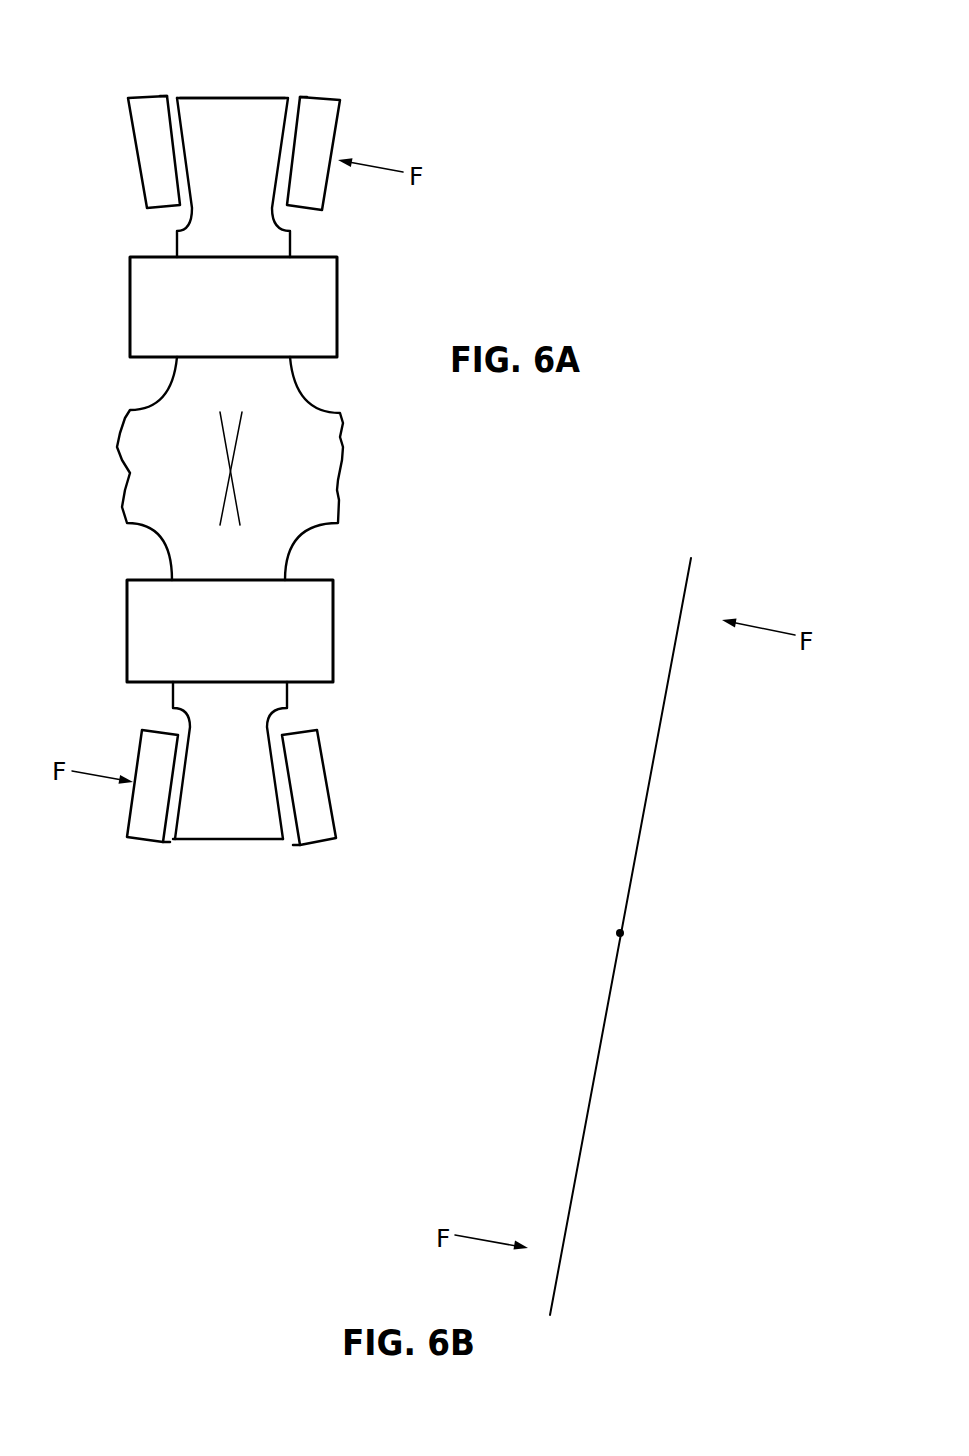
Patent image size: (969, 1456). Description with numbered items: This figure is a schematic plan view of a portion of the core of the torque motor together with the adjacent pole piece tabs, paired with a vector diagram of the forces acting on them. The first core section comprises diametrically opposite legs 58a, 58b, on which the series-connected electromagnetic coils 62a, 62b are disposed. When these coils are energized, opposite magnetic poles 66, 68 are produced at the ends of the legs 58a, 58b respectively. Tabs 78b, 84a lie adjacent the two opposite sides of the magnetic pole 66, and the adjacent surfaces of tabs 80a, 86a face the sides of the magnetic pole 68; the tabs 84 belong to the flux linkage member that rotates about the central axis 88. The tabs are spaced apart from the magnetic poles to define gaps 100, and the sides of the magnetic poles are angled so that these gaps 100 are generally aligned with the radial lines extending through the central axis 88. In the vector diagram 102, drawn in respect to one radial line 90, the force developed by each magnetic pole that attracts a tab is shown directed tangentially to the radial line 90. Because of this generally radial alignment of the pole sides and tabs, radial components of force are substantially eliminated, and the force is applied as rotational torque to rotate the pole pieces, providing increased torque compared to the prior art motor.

In FIG. 6A, the leg 58a is at (240, 98).
In FIG. 6A, the leg 58b is at (222, 842).
In FIG. 6A, the magnetic pole 66 is at (242, 159).
In FIG. 6A, the magnetic pole 68 is at (233, 788).
In FIG. 6A, the electromagnetic coil 62a is at (337, 308).
In FIG. 6A, the electromagnetic coil 62b is at (333, 645).
In FIG. 6A, the tabs 84 is at (211, 562).
In FIG. 6A, the central axis 88 is at (233, 470).
In FIG. 6B, the central axis 88 is at (623, 935).
In FIG. 6A, the tab 78b is at (135, 128).
In FIG. 6A, the tab 84a is at (327, 122).
In FIG. 6A, the tab 86a is at (138, 828).
In FIG. 6A, the tab 80a is at (322, 828).
In FIG. 6A, the gaps 100 is at (167, 98).
In FIG. 6B, the radial line 90 is at (660, 717).
In FIG. 6B, the vector diagram 102 is at (562, 1051).